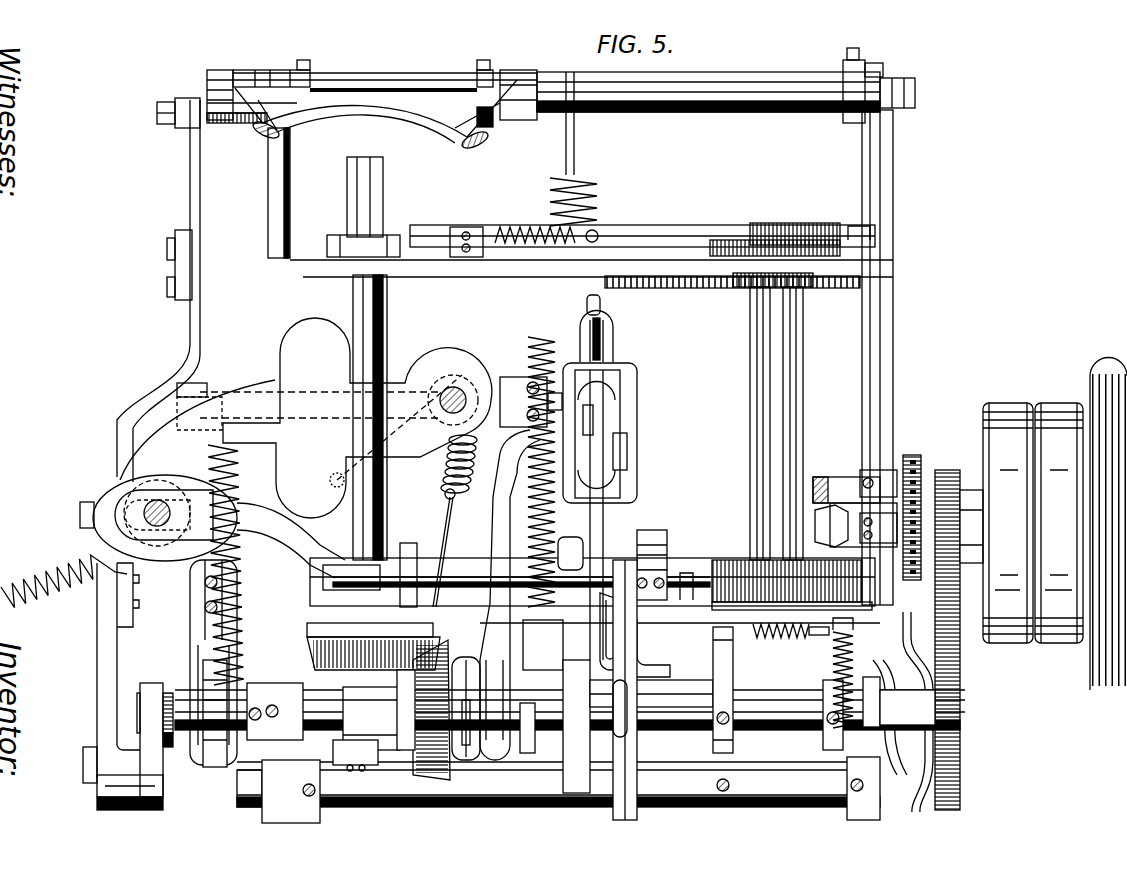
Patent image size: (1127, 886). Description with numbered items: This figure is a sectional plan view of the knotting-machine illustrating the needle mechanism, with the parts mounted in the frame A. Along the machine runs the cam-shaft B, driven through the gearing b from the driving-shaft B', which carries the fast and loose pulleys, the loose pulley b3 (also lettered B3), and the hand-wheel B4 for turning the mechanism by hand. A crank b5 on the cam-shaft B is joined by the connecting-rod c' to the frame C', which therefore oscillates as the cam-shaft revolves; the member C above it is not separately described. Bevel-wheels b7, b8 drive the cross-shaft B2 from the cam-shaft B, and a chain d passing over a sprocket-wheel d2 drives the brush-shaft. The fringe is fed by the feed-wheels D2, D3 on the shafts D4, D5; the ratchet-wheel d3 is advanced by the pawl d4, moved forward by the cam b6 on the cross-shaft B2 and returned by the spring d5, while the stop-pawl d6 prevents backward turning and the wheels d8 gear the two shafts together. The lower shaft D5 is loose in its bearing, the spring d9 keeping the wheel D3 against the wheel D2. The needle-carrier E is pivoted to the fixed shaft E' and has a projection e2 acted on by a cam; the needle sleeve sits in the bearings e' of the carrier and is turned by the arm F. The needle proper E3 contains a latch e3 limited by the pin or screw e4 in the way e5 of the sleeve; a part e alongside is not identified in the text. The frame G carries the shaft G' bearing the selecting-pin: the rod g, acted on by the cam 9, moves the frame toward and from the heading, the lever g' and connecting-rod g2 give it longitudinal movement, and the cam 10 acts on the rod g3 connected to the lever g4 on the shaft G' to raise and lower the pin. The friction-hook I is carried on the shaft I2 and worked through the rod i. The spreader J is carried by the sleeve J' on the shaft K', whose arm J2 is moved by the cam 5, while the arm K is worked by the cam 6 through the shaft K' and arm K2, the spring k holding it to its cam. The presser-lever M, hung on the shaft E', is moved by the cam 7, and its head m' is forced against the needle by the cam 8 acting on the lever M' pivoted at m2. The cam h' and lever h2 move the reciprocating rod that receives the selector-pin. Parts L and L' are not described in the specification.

The frame A is at (507, 360).
The shaft C is at (726, 85).
The frame C' is at (340, 180).
The hand-wheel B4 is at (369, 417).
The cam b6 is at (363, 207).
The pawl d4 is at (642, 230).
The spring d5 is at (546, 225).
The ratchet-wheel d3 is at (795, 223).
The wheels d8 is at (732, 264).
The stop-pawl d6 is at (857, 219).
The frame G is at (357, 418).
The shaft G' is at (320, 405).
The lever g4 is at (188, 386).
The connecting-rod g2 is at (212, 479).
The rod g3 is at (204, 662).
The cam 10 is at (215, 724).
The lever g' is at (330, 565).
The rod g is at (510, 595).
The bevel-wheel b8 is at (351, 577).
The friction-hook I is at (598, 625).
The needle-carrier E is at (558, 598).
The fixed shaft E' is at (748, 784).
The spring e is at (541, 463).
The latch e3 is at (602, 305).
The pin or screw e4 is at (608, 334).
The way e5 is at (588, 338).
The bearings e' is at (600, 425).
The projection e2 is at (589, 420).
The arm F is at (628, 451).
The head m' is at (567, 543).
The needle E3 is at (601, 581).
The rod i is at (652, 541).
The shaft I2 is at (663, 575).
The bracket L' is at (653, 648).
The loop L is at (603, 633).
The presser-lever M is at (412, 721).
The cam-shaft B is at (570, 714).
The cam 8 is at (371, 718).
The lever M' is at (345, 752).
The pivot m2 is at (366, 765).
The loose pulley b3 is at (368, 653).
The bevel-wheel b7 is at (688, 710).
The cam 9 is at (477, 722).
The cam 7 is at (527, 728).
The spreader J is at (576, 726).
The sleeve J' is at (651, 691).
The arm J2 is at (723, 690).
The arm K is at (633, 690).
The shaft K' is at (815, 709).
The arm K2 is at (834, 643).
The spring k is at (848, 680).
The spring d9 is at (791, 644).
The cam 5 is at (723, 741).
The cam 6 is at (824, 743).
The shaft D5 is at (748, 423).
The shaft D4 is at (780, 416).
The feed-wheel D3 is at (787, 571).
The feed-wheel D2 is at (792, 610).
The sprocket-wheel d2 is at (910, 504).
The chain d is at (924, 510).
The gear b is at (947, 631).
The driving-shaft B' is at (970, 526).
The cross-shaft B2 is at (1008, 523).
The loose pulley B3 is at (1059, 523).
The cam h' is at (918, 712).
The lever h2 is at (899, 717).
The connecting-rod c' is at (82, 682).
The crank b5 is at (155, 740).